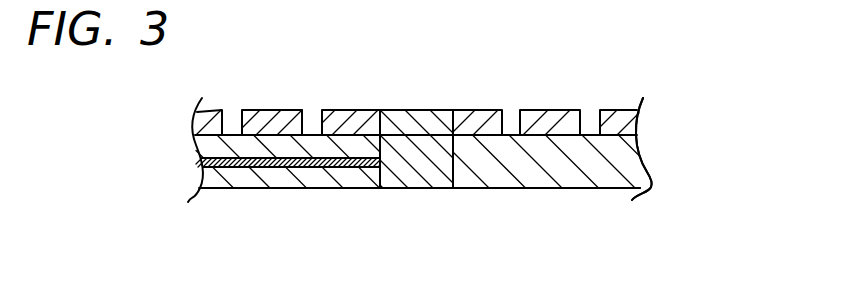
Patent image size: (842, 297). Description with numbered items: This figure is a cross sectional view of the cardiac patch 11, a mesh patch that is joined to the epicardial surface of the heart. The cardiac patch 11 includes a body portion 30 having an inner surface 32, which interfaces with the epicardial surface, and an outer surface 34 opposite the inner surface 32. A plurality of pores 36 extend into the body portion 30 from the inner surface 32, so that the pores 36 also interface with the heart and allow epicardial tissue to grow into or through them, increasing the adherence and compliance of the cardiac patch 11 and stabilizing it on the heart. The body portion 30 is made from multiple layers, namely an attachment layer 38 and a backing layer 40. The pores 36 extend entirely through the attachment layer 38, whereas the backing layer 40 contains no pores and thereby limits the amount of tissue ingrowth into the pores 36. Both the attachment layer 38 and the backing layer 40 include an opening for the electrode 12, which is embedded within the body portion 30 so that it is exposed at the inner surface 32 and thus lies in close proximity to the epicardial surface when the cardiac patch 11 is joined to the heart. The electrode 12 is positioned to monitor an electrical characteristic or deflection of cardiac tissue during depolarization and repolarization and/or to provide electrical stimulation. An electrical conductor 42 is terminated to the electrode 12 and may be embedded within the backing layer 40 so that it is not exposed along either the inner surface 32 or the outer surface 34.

The cardiac patch 11 is at (567, 217).
The electrode 12 is at (413, 170).
The body portion 30 is at (665, 142).
The inner surface 32 is at (552, 110).
The outer surface 34 is at (526, 180).
The pores 36 is at (511, 118).
The attachment layer 38 is at (193, 118).
The backing layer 40 is at (199, 177).
The electrical conductor 42 is at (200, 162).